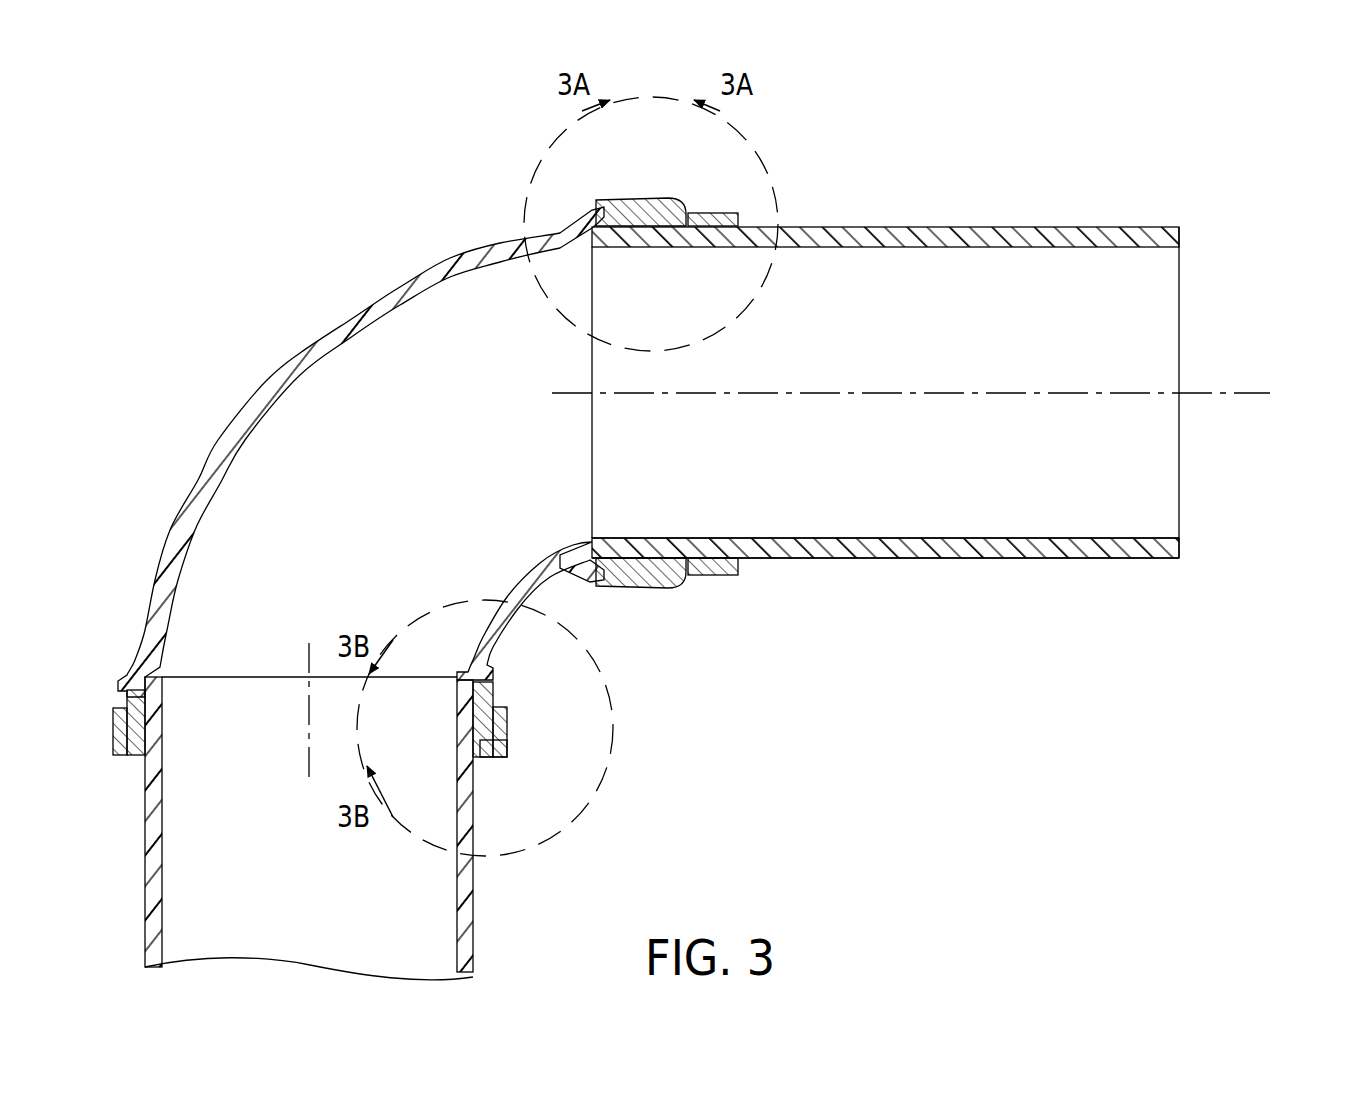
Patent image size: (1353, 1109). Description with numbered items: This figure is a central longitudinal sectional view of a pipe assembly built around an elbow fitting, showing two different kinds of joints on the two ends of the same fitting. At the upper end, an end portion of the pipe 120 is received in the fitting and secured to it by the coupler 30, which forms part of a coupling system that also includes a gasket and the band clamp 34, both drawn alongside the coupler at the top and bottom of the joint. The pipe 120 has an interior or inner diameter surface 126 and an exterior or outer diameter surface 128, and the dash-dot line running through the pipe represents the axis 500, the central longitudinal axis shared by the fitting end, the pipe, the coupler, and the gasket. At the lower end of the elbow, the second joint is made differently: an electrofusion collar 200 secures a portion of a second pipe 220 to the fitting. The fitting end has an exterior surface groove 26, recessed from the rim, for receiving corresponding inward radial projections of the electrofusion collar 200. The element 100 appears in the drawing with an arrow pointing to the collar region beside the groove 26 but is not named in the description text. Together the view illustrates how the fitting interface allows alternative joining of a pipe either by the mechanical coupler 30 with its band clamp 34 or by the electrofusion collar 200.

The axis 500 is at (1235, 393).
The pipe 120 is at (972, 550).
The inner diameter surface 126 is at (862, 540).
The outer diameter surface 128 is at (1050, 558).
The coupler 30 is at (632, 598).
The band clamp 34 is at (717, 584).
The coupling ring 100 is at (503, 683).
The collar 200 is at (520, 720).
The groove 26 is at (505, 745).
The second pipe 220 is at (476, 896).